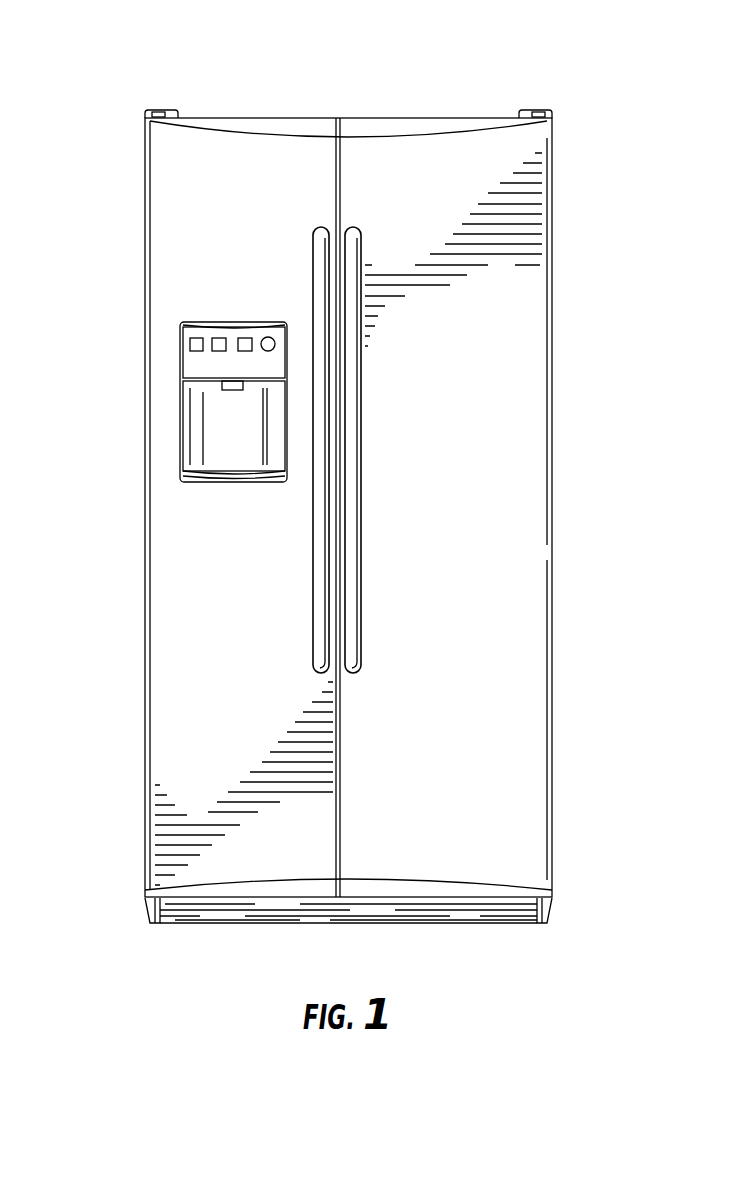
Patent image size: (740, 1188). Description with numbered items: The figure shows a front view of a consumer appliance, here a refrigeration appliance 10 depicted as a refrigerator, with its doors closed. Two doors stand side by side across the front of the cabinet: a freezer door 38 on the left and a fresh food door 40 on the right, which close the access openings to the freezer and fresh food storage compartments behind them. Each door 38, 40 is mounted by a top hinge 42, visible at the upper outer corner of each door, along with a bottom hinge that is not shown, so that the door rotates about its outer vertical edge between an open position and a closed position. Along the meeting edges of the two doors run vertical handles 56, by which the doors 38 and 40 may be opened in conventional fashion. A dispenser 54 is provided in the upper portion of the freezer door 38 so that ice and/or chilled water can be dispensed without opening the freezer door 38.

The refrigeration appliance 10 is at (378, 66).
The freezer door 38 is at (166, 608).
The fresh food door 40 is at (516, 586).
The top hinge 42 is at (162, 110).
The dispenser 54 is at (179, 412).
The handles 56 is at (313, 265).